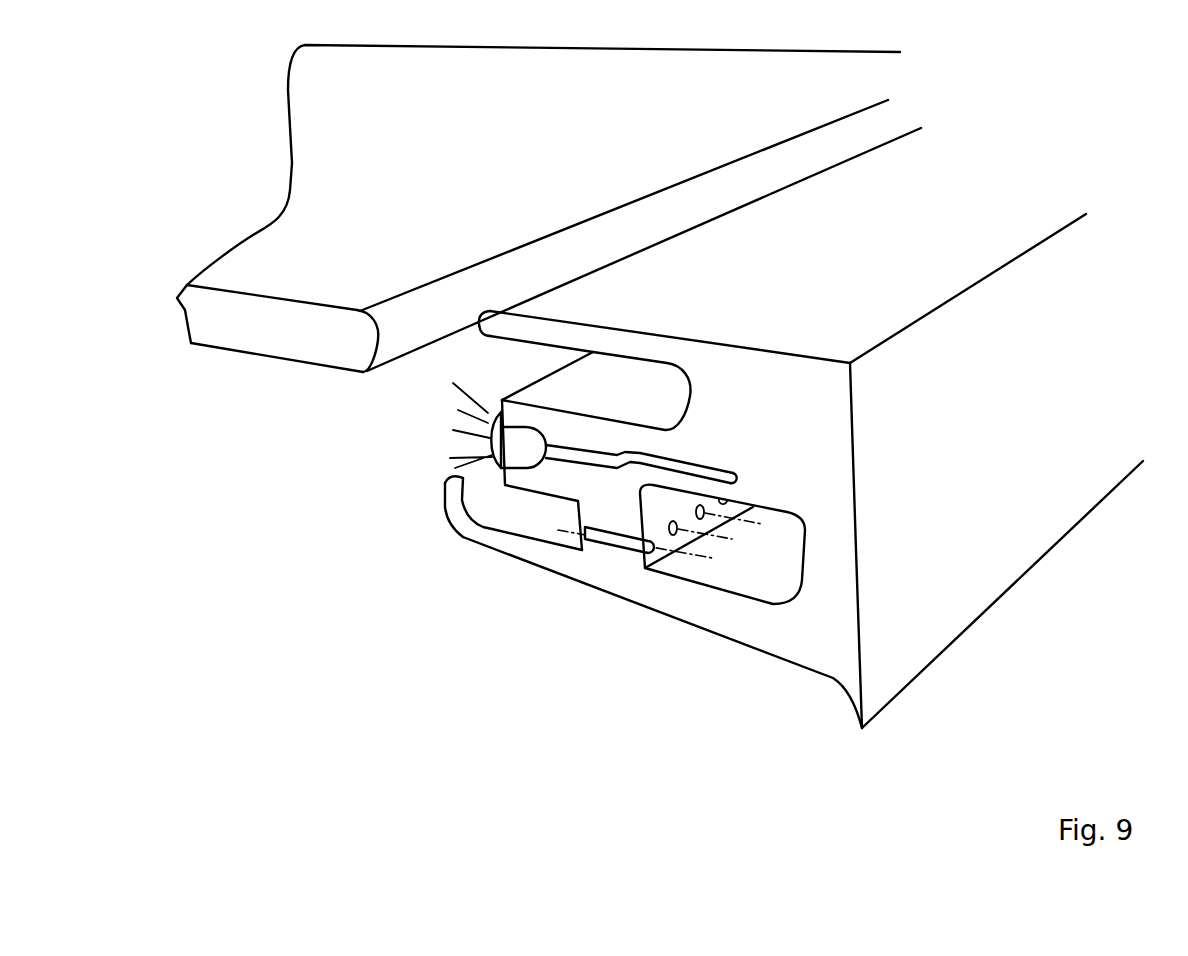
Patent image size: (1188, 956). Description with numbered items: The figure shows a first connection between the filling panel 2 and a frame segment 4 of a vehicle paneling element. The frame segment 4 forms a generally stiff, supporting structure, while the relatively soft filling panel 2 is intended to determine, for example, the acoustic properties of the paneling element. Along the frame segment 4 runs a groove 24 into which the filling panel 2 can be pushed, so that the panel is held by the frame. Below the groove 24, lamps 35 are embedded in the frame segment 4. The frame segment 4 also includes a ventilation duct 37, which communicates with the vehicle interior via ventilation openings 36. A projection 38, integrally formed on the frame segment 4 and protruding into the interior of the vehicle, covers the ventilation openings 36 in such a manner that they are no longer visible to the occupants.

The filling panel 2 is at (529, 150).
The frame segment 4 is at (958, 482).
The groove 24 is at (626, 401).
The lamps 35 is at (507, 442).
The ventilation openings 36 is at (600, 538).
The ventilation duct 37 is at (766, 571).
The projection 38 is at (478, 537).